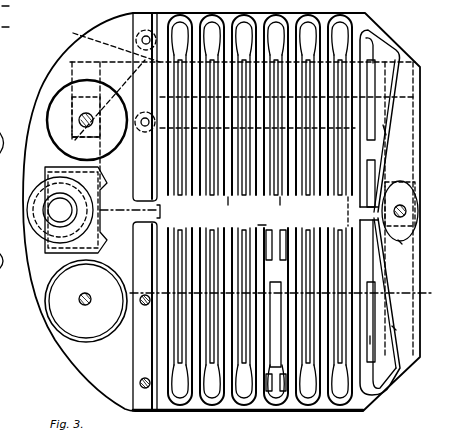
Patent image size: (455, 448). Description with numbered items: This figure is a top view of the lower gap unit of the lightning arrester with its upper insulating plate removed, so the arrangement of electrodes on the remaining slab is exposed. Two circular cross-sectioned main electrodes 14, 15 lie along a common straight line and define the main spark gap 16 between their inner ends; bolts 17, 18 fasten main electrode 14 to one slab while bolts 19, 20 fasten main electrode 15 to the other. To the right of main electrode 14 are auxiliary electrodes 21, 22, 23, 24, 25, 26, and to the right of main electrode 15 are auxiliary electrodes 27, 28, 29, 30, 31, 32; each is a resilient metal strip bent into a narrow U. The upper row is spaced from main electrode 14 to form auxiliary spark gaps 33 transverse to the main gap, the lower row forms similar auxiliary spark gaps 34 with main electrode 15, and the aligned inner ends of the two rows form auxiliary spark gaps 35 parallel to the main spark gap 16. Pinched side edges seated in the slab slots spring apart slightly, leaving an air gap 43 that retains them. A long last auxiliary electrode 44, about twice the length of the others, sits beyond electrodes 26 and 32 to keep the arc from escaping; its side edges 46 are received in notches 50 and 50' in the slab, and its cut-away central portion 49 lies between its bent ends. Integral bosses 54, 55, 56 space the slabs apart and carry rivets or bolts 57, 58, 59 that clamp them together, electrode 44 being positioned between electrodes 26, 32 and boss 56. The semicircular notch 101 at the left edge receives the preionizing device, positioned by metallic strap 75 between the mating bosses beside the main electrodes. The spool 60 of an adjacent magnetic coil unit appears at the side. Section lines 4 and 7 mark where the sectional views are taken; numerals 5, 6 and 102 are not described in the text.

The section line 4— 4 is at (325, 238).
The adjacent element 5 is at (9, 6).
The adjacent element 6 is at (9, 26).
The section line 7— 7 is at (15, 212).
The main electrode 14 is at (145, 107).
The main electrode 15 is at (145, 316).
The main spark gap 16 is at (160, 218).
The bolt 17 is at (142, 38).
The bolt 18 is at (132, 100).
The bolt 19 is at (140, 302).
The bolt 20 is at (140, 384).
The auxiliary electrode 21 is at (180, 14).
The auxiliary electrode 22 is at (212, 14).
The auxiliary electrode 23 is at (244, 14).
The auxiliary electrode 24 is at (276, 14).
The auxiliary electrode 25 is at (308, 14).
The auxiliary electrode 26 is at (340, 14).
The auxiliary electrode 27 is at (178, 412).
The auxiliary electrode 28 is at (212, 412).
The auxiliary electrode 29 is at (244, 412).
The auxiliary electrode 30 is at (278, 412).
The auxiliary electrode 31 is at (310, 412).
The auxiliary electrode 32 is at (343, 412).
The auxiliary spark gap 33 is at (232, 196).
The auxiliary spark gap 34 is at (227, 231).
The auxiliary spark gap 35 is at (282, 200).
The air gap 43 is at (271, 350).
The last auxiliary electrode 44 is at (397, 329).
The side edge 46 is at (372, 340).
The central portion 49 is at (387, 125).
The notch 50 is at (388, 235).
The notch 50' is at (388, 211).
The boss 54 is at (46, 105).
The boss 55 is at (50, 325).
The boss 56 is at (400, 243).
The rivet or bolt 57 is at (78, 120).
The rivet or bolt 58 is at (85, 306).
The rivet or bolt 59 is at (400, 204).
The spool 60 is at (106, 283).
The metallic strap 75 is at (107, 44).
The semicircular notch 101 is at (43, 227).
The bearing 102 is at (28, 220).